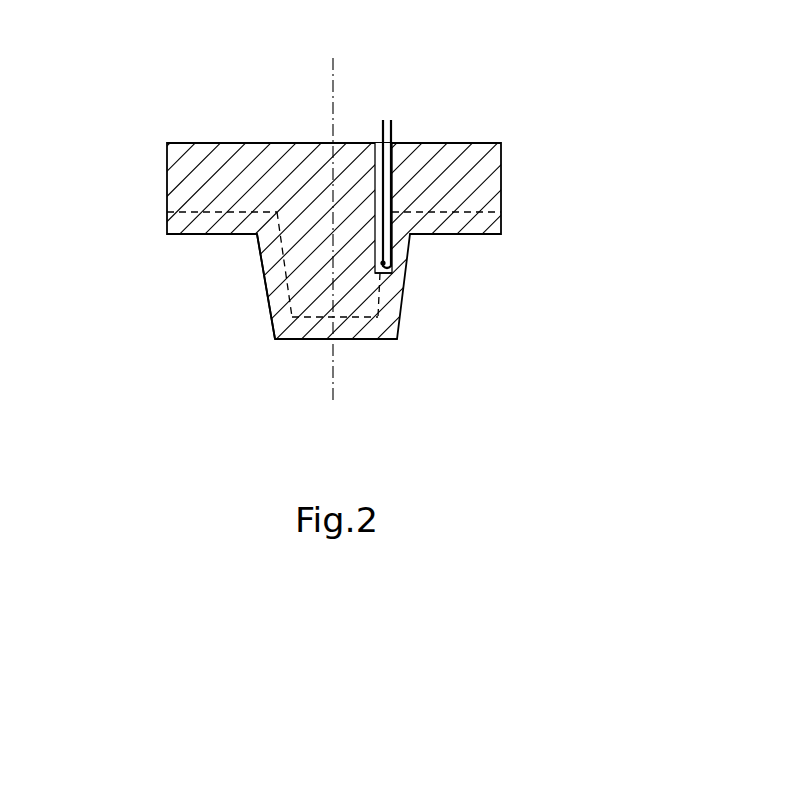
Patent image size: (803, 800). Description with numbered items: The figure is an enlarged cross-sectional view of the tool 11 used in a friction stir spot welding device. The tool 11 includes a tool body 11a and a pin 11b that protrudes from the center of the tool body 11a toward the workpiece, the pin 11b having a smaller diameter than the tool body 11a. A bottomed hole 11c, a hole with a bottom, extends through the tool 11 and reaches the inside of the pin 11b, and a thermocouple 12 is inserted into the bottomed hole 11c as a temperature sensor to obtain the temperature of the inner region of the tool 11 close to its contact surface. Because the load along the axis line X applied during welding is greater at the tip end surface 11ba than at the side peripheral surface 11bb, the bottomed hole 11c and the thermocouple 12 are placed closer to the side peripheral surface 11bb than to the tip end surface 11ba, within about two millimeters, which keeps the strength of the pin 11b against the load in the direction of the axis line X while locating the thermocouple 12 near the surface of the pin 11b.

The tool 11 is at (167, 162).
The tool body 11a is at (180, 236).
The pin 11b is at (275, 341).
The tip end surface 11ba is at (352, 342).
The side peripheral surface 11bb is at (396, 260).
The bottomed hole 11c is at (375, 170).
The thermocouple 12 is at (394, 267).
The axis line X is at (333, 78).